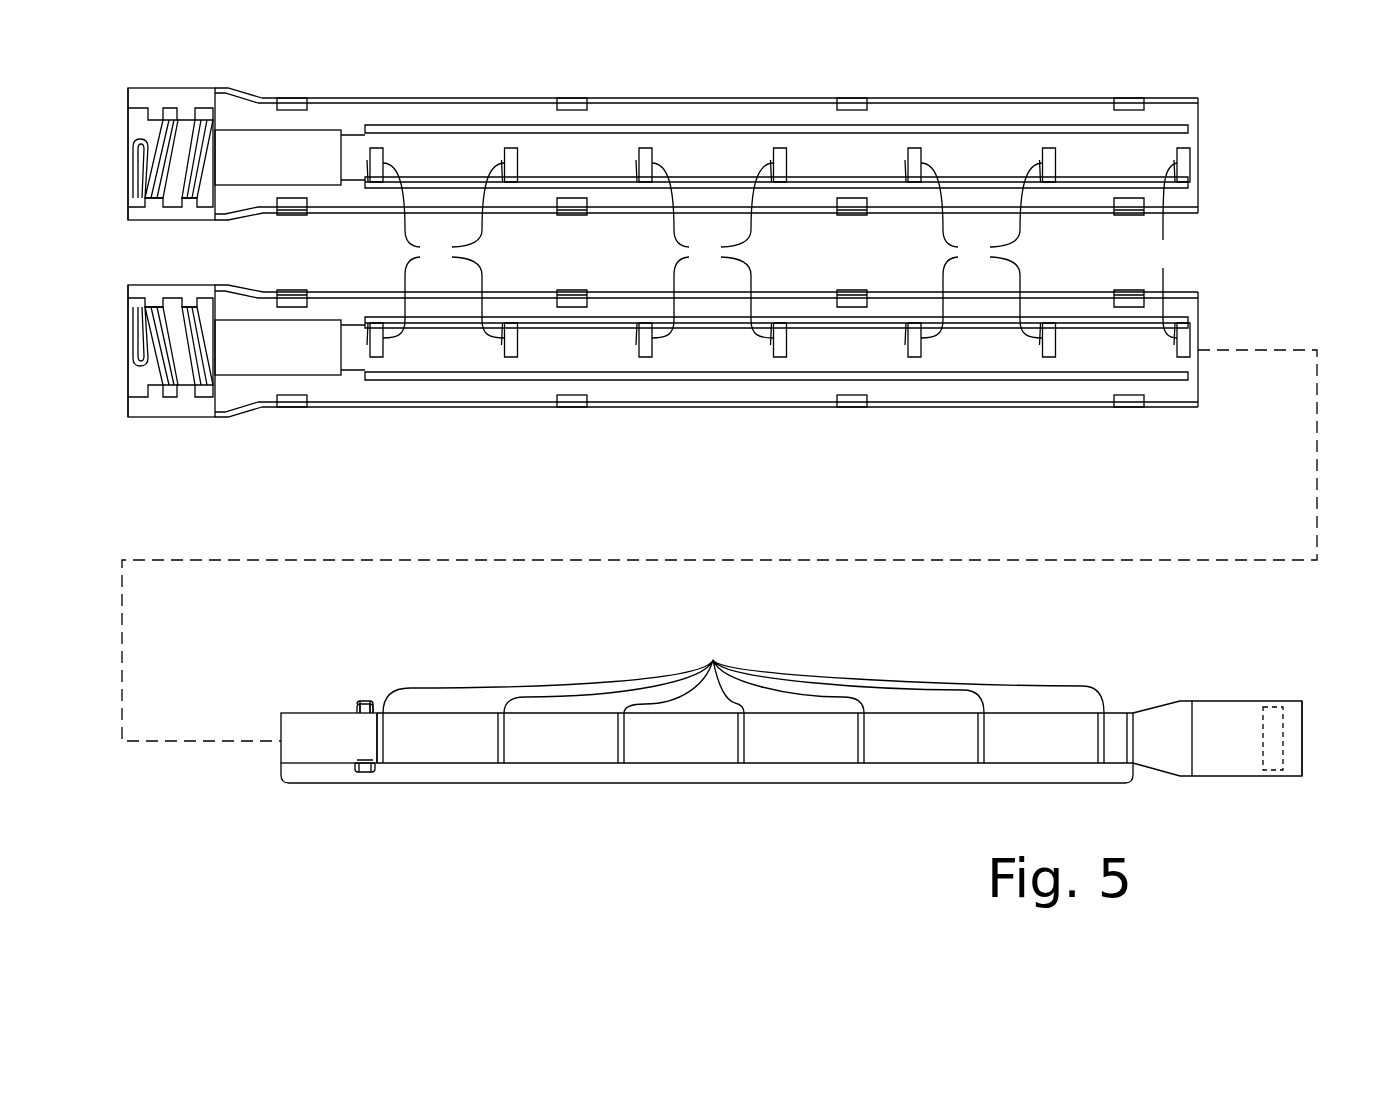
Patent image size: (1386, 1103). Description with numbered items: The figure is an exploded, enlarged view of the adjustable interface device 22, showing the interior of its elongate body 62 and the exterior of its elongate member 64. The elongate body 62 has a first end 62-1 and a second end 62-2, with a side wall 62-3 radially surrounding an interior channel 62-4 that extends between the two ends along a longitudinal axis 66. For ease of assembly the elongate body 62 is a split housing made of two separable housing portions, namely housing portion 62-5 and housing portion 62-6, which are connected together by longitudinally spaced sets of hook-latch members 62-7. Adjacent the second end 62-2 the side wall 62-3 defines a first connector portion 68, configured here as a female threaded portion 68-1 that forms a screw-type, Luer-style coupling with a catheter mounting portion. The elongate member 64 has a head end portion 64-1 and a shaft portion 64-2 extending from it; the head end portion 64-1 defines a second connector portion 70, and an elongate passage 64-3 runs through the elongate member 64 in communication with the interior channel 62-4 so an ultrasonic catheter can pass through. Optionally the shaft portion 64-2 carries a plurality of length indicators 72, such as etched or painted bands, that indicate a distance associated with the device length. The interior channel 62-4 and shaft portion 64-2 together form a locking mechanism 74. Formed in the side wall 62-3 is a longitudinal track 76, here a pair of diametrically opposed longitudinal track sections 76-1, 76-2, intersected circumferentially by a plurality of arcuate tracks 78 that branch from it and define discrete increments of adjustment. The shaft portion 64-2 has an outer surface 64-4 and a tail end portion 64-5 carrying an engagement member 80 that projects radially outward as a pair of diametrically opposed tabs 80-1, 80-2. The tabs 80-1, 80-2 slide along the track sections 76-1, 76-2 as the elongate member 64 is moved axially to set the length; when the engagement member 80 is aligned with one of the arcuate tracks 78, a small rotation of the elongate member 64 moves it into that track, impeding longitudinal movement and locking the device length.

The adjustable interface device 22 is at (764, 751).
The elongate body 62 is at (1279, 234).
The first end 62-1 is at (1200, 393).
The second end 62-2 is at (128, 416).
The side wall 62-3 is at (232, 395).
The interior channel 62-4 is at (110, 330).
The housing portion 62-5 is at (945, 97).
The housing portion 62-6 is at (945, 408).
The hook-latch members 62-7 is at (1131, 97).
The elongate member 64 is at (764, 730).
The head end portion 64-1 is at (1135, 783).
The shaft portion 64-2 is at (383, 790).
The elongate passage 64-3 is at (1325, 731).
The outer surface 64-4 is at (318, 765).
The tail end portion 64-5 is at (378, 783).
The longitudinal axis 66 is at (183, 741).
The first connector portion 68 is at (150, 258).
The female threaded portion 68-1 is at (145, 345).
The second connector portion 70 is at (1275, 707).
The length indicators 72 is at (713, 660).
The locking mechanism 74 is at (348, 678).
The longitudinal track 76 is at (864, 218).
The longitudinal track section 76-1 is at (1198, 375).
The longitudinal track section 76-2 is at (1198, 317).
The arcuate tracks 78 is at (780, 250).
The engagement member 80 is at (258, 704).
The tab 80-1 is at (355, 762).
The tab 80-2 is at (357, 706).